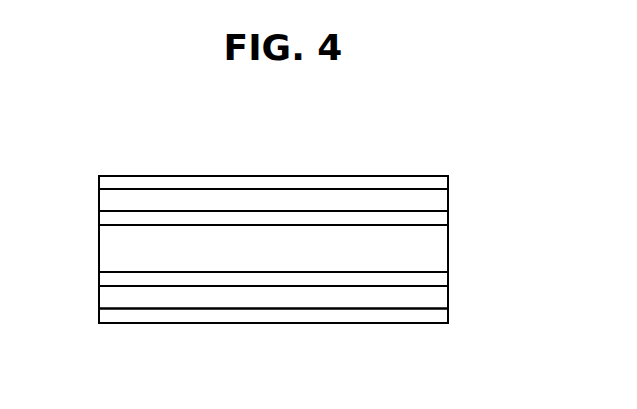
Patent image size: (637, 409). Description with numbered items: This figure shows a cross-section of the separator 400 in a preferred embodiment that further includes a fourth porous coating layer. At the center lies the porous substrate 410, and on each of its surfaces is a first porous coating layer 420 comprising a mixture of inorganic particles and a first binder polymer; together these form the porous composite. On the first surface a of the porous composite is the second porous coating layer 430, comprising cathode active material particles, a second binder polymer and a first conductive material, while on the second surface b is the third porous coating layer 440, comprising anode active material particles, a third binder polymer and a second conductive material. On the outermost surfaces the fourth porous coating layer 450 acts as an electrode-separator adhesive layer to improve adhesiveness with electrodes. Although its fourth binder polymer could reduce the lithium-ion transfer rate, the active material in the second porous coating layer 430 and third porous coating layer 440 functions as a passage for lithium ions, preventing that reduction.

The separator 400 is at (370, 156).
The porous substrate 410 is at (449, 249).
The first porous coating layer 420 is at (449, 219).
The second porous coating layer 430 is at (449, 199).
The third porous coating layer 440 is at (449, 298).
The fourth porous coating layer 450 is at (449, 181).
The first surface a is at (127, 206).
The second surface b is at (128, 288).